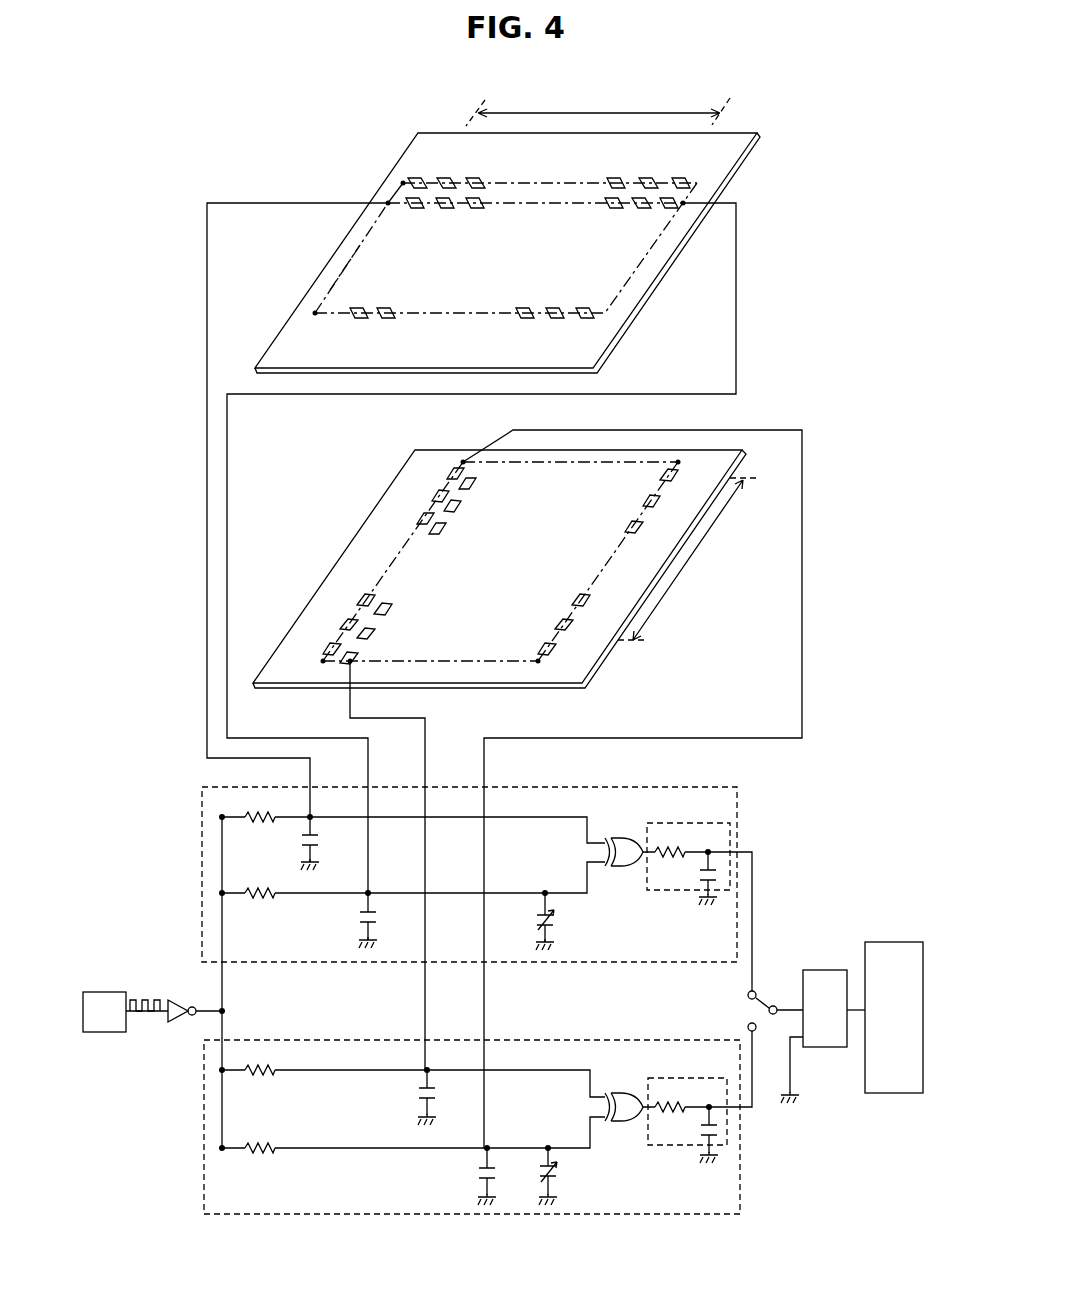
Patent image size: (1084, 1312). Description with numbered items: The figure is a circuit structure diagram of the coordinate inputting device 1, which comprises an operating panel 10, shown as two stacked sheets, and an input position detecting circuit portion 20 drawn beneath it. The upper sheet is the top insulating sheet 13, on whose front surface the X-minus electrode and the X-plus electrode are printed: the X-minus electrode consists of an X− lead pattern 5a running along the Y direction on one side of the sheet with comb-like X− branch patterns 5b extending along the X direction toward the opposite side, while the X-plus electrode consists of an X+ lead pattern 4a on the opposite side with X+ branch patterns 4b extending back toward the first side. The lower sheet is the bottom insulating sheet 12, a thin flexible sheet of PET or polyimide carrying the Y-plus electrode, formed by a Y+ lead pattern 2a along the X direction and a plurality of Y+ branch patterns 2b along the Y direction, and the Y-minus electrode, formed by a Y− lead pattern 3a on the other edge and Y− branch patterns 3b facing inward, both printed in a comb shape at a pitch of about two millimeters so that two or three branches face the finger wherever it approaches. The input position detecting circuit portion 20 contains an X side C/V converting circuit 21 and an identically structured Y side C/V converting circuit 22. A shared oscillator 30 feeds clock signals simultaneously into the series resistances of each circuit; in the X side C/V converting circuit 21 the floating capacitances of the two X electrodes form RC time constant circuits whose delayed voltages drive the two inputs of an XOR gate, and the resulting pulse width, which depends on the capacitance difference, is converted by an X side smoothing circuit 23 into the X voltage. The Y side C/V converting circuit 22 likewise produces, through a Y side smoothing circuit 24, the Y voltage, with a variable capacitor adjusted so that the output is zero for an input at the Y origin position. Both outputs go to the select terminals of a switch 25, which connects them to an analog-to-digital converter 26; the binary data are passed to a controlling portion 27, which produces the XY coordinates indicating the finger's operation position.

The coordinate inputting device 1 is at (325, 148).
The top insulating sheet 13 is at (726, 150).
The X+ lead pattern 4a is at (690, 196).
The X+ branch patterns 4b is at (672, 170).
The X− lead pattern 5a is at (366, 238).
The X− branch patterns 5b is at (358, 312).
The bottom insulating sheet 12 is at (663, 452).
The Y+ lead pattern 2a is at (476, 470).
The Y+ branch patterns 2b is at (452, 486).
The Y− lead pattern 3a is at (508, 661).
The Y− branch patterns 3b is at (712, 470).
The operating panel 10 is at (158, 742).
The input position detecting circuit portion 20 is at (162, 799).
The X side C/V converting circuit 21 is at (200, 868).
The Y side C/V converting circuit 22 is at (200, 1108).
The X side smoothing circuit 23 is at (663, 893).
The Y side smoothing circuit 24 is at (664, 1148).
The switch 25 is at (774, 996).
The A/D converter 26 is at (822, 1048).
The controlling portion 27 is at (880, 1093).
The oscillator 30 is at (105, 1033).